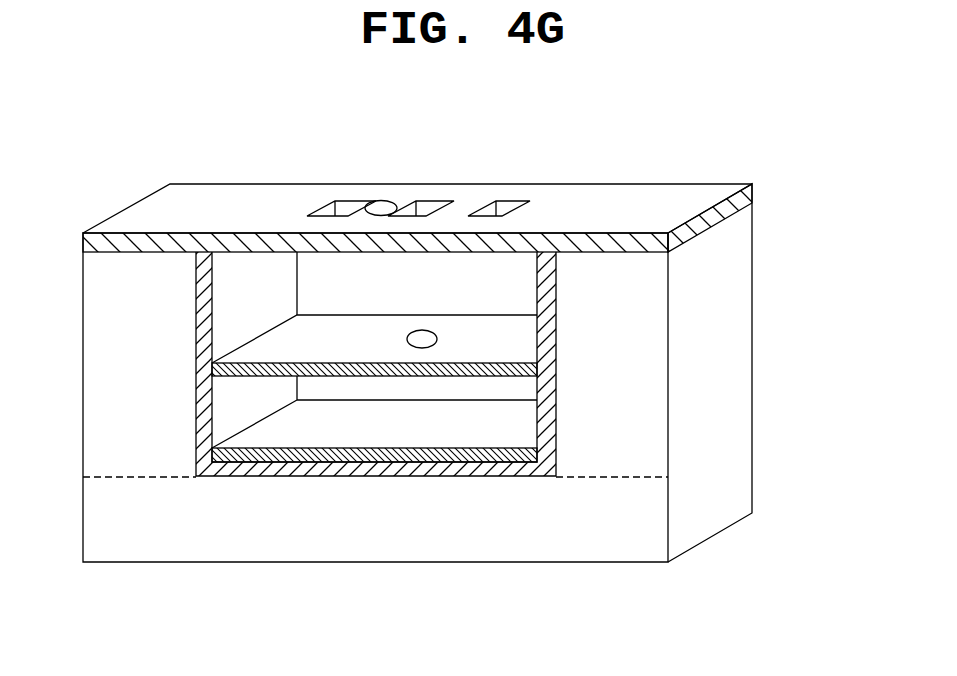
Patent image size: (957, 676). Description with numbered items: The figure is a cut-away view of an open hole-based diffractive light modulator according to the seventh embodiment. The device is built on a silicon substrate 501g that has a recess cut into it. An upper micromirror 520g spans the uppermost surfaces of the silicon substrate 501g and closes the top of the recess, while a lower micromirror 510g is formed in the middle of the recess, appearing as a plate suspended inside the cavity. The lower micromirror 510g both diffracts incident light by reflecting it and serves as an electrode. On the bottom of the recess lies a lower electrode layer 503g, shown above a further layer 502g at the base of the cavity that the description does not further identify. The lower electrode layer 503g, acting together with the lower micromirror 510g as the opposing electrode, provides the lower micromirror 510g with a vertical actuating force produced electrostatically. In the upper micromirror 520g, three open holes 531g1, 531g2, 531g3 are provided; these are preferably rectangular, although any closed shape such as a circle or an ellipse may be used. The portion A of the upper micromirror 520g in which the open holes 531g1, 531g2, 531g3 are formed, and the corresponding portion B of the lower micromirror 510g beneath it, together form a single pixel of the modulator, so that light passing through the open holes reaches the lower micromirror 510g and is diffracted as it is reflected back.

The silicon substrate 501g is at (745, 479).
The upper micromirror 520g is at (745, 195).
The open hole 531g1 is at (330, 208).
The open hole 531g2 is at (425, 207).
The open hole 531g3 is at (505, 205).
The portion of the upper micromirror A is at (385, 207).
The portion of the lower micromirror B is at (423, 337).
The lower case wall 502g is at (469, 465).
The lower electrode layer 503g is at (368, 457).
The lower micromirror 510g is at (262, 368).